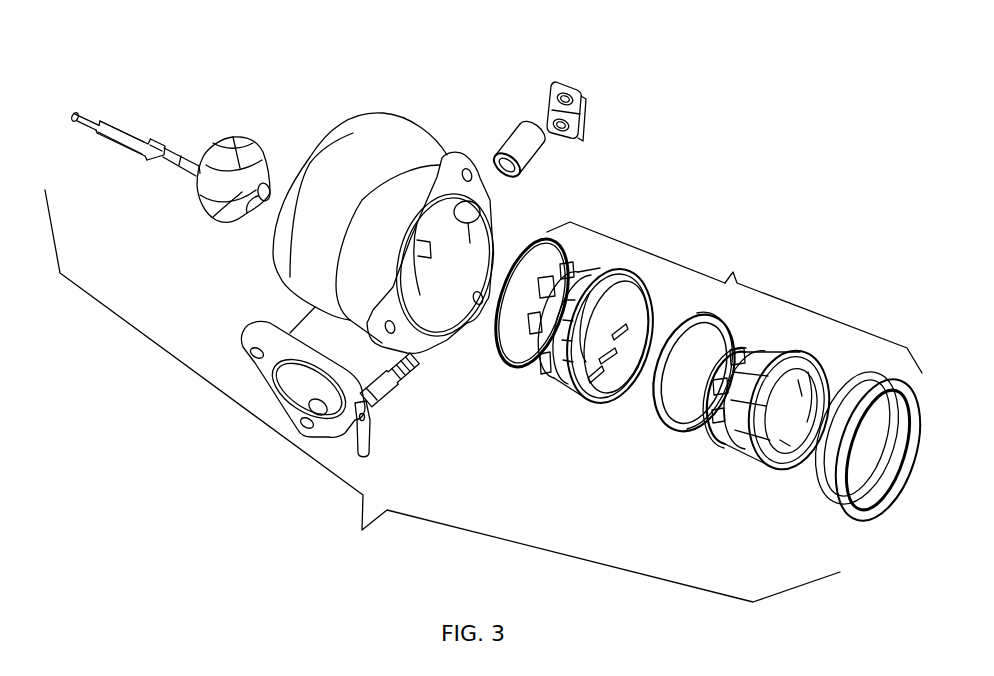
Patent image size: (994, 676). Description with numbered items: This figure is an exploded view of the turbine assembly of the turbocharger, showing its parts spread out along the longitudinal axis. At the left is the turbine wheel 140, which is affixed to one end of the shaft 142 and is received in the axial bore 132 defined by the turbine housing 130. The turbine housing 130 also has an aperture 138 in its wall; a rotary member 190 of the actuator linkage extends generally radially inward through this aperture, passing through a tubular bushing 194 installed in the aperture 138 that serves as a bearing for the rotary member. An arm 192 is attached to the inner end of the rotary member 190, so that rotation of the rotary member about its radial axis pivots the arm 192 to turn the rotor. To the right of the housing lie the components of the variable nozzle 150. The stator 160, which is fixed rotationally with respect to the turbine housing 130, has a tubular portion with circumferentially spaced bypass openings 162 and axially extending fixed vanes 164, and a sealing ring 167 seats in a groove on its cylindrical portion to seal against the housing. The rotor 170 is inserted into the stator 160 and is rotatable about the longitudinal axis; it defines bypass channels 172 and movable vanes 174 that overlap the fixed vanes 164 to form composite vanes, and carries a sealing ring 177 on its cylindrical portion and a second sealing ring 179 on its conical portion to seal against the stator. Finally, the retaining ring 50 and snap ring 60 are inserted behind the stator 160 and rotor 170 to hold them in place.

The retaining ring 50 is at (822, 490).
The snap ring 60 is at (852, 512).
The turbine housing 130 is at (397, 137).
The axial bore 132 is at (437, 313).
The aperture 138 is at (470, 243).
The turbine wheel 140 is at (233, 153).
The shaft 142 is at (141, 141).
The variable nozzle 150 is at (823, 312).
The stator 160 is at (618, 379).
The bypass openings 162 is at (625, 334).
The fixed vanes 164 is at (537, 332).
The sealing ring 167 is at (502, 370).
The rotor 170 is at (752, 422).
The bypass channels 172 is at (756, 346).
The movable vanes 174 is at (710, 423).
The sealing ring 177 is at (682, 430).
The second sealing ring 179 is at (653, 398).
The rotary member 190 is at (380, 390).
The arm 192 is at (370, 441).
The tubular bushing 194 is at (518, 138).